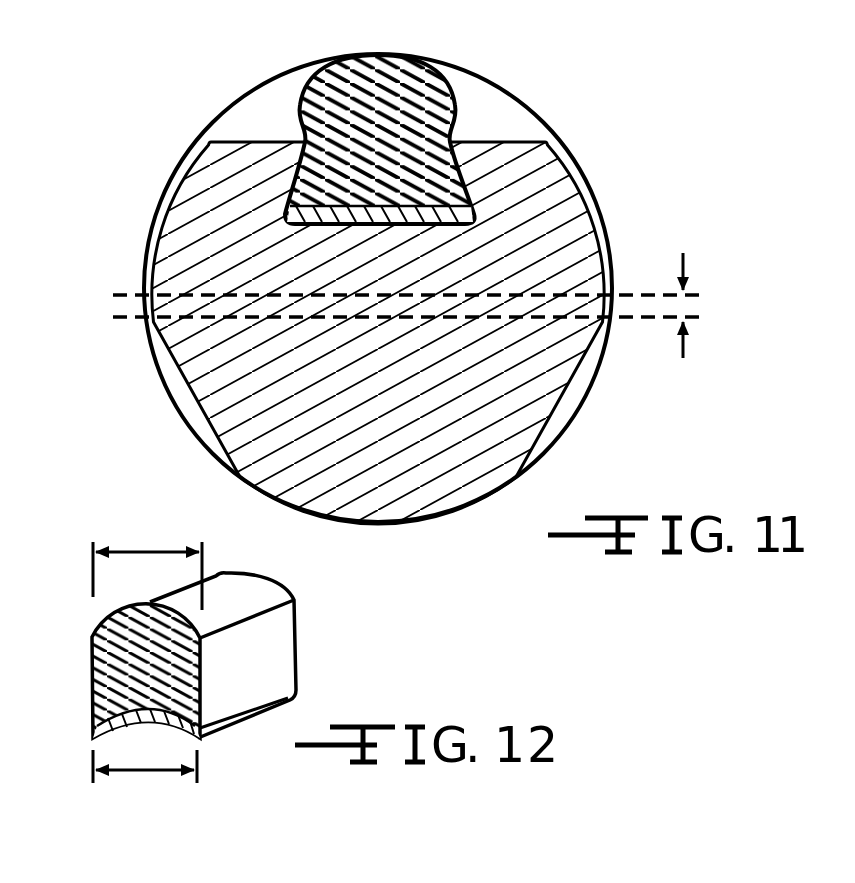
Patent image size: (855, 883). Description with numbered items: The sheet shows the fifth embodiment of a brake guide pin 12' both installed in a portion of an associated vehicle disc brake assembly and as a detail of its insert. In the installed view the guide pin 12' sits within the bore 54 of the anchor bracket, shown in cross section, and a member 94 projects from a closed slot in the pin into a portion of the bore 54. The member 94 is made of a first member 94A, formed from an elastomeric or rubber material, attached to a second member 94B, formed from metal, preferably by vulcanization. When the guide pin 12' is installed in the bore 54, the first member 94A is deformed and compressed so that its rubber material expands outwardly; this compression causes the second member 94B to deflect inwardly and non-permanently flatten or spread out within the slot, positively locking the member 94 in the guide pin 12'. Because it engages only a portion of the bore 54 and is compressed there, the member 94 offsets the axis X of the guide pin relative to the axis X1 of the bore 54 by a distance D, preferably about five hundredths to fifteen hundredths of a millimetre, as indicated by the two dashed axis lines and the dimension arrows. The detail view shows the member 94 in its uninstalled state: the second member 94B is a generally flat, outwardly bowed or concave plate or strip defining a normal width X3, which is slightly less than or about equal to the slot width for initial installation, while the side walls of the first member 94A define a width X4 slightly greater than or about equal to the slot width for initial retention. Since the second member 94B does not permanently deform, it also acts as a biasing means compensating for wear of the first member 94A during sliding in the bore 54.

In FIG. 11, the guide pin 12' is at (400, 293).
In FIG. 11, the bore 54 is at (188, 143).
In FIG. 11, the member 94 is at (404, 117).
In FIG. 12, the member 94 is at (152, 628).
In FIG. 12, the first member 94A is at (118, 636).
In FIG. 11, the second member 94B is at (380, 214).
In FIG. 12, the second member 94B is at (157, 725).
In FIG. 11, the axis of the bore X1 is at (640, 292).
In FIG. 11, the axis of the guide pin X is at (640, 319).
In FIG. 11, the distance D is at (686, 307).
In FIG. 12, the width of the second member X3 is at (152, 772).
In FIG. 12, the width of the first member X4 is at (138, 550).